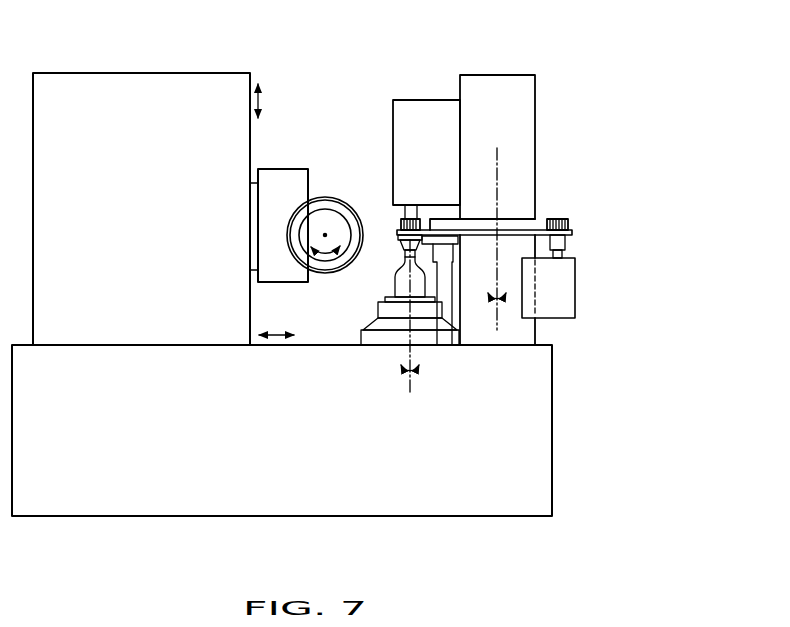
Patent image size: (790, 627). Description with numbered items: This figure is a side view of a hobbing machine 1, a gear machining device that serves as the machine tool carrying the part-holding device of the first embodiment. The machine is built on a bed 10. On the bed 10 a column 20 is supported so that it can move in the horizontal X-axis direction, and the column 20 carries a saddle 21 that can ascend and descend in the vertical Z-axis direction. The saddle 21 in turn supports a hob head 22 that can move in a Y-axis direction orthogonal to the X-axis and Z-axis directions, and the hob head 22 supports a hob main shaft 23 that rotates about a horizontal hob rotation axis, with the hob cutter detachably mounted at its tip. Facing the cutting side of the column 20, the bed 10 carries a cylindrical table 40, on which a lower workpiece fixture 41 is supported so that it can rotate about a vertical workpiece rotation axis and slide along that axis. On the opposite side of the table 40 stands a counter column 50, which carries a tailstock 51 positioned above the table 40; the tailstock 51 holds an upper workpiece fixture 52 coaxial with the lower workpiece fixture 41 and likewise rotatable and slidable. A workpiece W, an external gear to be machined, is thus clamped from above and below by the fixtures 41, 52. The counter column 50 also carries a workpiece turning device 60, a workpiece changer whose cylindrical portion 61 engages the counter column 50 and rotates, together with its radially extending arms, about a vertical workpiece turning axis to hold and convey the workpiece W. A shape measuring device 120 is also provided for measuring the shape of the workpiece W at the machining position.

The hobbing machine 1 is at (369, 262).
The bed 10 is at (552, 467).
The column 20 is at (88, 73).
The saddle 21 is at (284, 169).
The hob head 22 is at (326, 197).
The hob main shaft 23 is at (340, 209).
The table 40 is at (433, 347).
The lower workpiece fixture 41 is at (402, 258).
The counter column 50 is at (509, 75).
The tailstock 51 is at (420, 100).
The upper workpiece fixture 52 is at (401, 223).
The workpiece turning device 60 is at (508, 218).
The cylindrical portion 61 is at (523, 218).
The shape measuring device 120 is at (446, 291).
The workpiece W is at (401, 222).